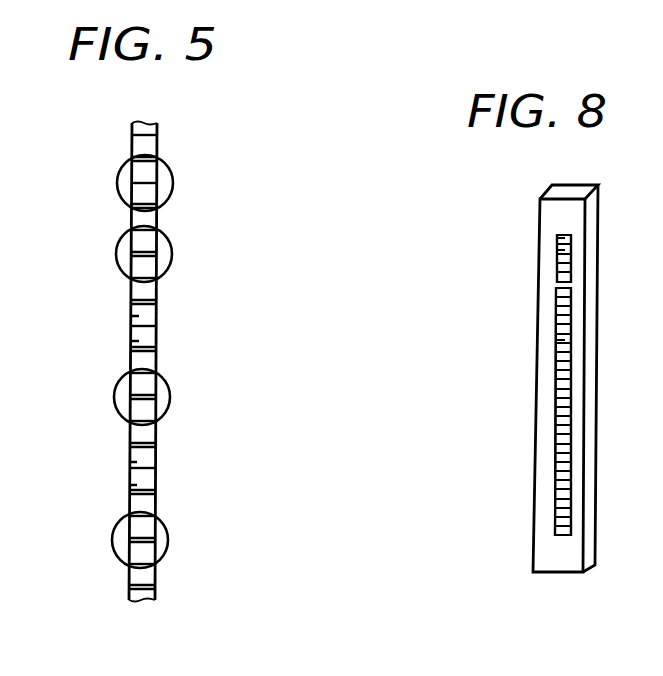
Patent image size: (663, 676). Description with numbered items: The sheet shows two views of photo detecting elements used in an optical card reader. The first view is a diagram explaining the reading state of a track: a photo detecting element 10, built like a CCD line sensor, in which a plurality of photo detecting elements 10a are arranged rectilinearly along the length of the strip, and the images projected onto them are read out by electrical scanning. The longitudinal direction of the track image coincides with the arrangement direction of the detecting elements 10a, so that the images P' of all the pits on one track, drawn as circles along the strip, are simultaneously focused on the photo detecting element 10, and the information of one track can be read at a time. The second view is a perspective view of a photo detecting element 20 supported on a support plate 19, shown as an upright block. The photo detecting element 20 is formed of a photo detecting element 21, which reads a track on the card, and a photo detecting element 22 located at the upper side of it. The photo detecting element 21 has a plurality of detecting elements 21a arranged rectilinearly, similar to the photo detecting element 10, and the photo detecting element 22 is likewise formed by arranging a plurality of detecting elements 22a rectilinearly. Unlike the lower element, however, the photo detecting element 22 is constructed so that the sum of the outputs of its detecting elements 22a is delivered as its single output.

In FIG. 5, the photo detecting element 10 is at (129, 590).
In FIG. 5, the photo detecting elements 10a is at (132, 341).
In FIG. 5, the images of pits P' is at (170, 361).
In FIG. 8, the support plate 19 is at (550, 210).
In FIG. 8, the photo detecting element 20 is at (437, 285).
In FIG. 8, the photo detecting element 21 is at (556, 388).
In FIG. 8, the detecting elements 21a is at (556, 352).
In FIG. 8, the photo detecting element 22 is at (556, 282).
In FIG. 8, the detecting elements 22a is at (557, 250).